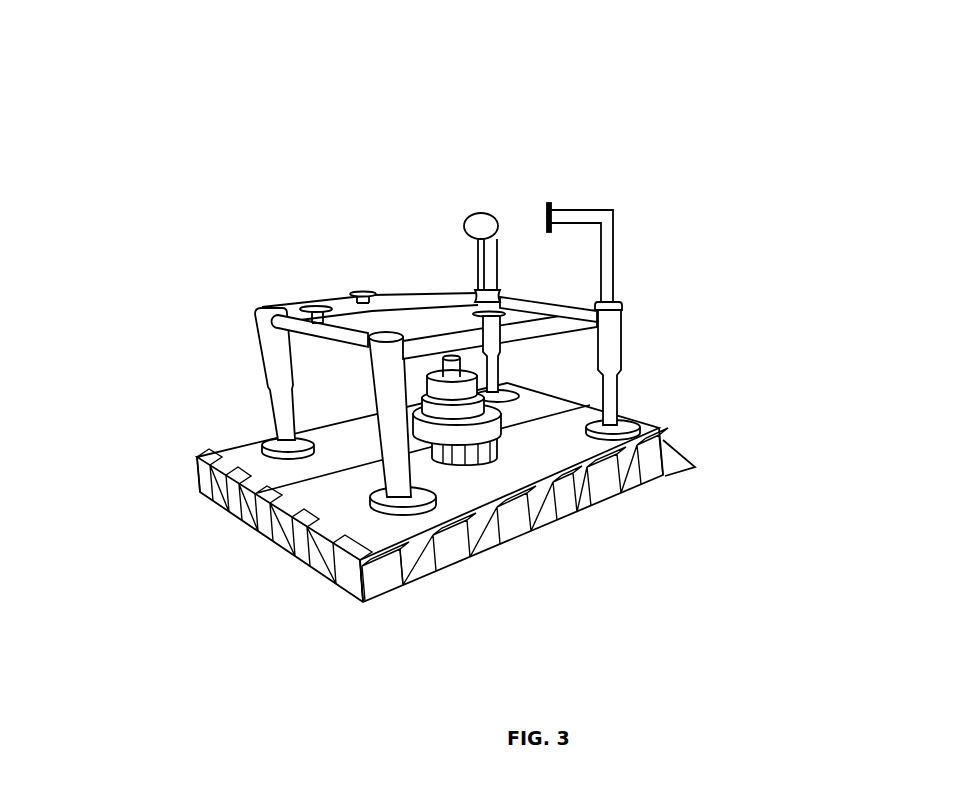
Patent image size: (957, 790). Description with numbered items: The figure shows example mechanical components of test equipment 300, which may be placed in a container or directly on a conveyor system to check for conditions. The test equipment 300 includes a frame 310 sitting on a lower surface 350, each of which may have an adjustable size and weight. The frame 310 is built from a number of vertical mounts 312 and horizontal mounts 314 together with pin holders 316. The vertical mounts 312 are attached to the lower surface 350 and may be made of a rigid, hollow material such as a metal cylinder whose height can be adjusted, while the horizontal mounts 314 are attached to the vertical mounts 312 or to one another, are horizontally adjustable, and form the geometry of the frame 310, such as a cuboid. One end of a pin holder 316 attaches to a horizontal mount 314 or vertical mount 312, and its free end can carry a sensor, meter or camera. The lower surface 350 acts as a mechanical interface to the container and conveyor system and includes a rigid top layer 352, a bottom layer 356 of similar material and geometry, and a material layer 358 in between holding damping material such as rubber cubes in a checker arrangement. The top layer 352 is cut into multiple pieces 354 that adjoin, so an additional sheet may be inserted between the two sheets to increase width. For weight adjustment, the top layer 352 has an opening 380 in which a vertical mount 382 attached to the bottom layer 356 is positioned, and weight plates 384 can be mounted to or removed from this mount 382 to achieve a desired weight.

The test equipment 300 is at (127, 107).
The frame 310 is at (872, 192).
The vertical mounts 312 is at (262, 348).
The horizontal mounts 314 is at (459, 296).
The pin holders 316 is at (478, 256).
The lower surface 350 is at (872, 437).
The top layer 352 is at (219, 458).
The pieces 354 is at (319, 507).
The bottom layer 356 is at (488, 549).
The material layer 358 is at (384, 581).
The opening 380 is at (495, 439).
The vertical mount 382 is at (460, 366).
The weight plates 384 is at (481, 403).